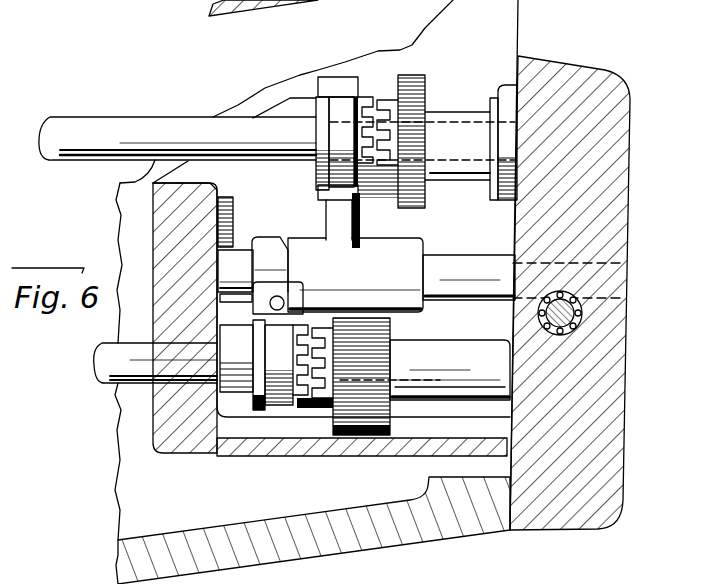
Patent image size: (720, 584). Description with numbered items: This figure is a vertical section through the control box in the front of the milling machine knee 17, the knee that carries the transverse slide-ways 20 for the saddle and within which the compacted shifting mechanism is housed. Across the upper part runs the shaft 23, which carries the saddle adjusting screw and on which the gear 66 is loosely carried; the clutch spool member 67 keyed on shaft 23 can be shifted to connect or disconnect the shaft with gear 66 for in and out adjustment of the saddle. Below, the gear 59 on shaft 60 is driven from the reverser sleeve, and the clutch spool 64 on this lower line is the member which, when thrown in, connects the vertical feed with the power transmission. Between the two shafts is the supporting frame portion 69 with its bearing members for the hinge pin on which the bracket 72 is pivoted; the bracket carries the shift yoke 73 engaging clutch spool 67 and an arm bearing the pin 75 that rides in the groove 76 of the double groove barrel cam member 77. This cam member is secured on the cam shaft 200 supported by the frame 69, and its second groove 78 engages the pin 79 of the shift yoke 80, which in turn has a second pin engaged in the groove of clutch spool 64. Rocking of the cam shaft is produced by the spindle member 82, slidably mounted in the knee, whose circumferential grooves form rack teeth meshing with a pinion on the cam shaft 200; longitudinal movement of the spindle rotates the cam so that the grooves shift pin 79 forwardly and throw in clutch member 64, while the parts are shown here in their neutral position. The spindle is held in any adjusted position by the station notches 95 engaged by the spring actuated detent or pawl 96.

The knee 17 is at (133, 515).
The transverse slide-ways 20 is at (508, 21).
The shaft 23 is at (148, 120).
The gear 59 is at (357, 436).
The shaft 60 is at (118, 356).
The clutch spool 64 is at (277, 406).
The gear 66 is at (408, 77).
The clutch spool member 67 is at (322, 108).
The supporting frame portion 69 is at (406, 452).
The bracket 72 is at (363, 212).
The shift yoke 73 is at (335, 79).
The pin 75 is at (399, 333).
The groove 76 is at (340, 250).
The double groove barrel cam member 77 is at (428, 244).
The second groove 78 is at (282, 242).
The pin 79 is at (222, 303).
The shift yoke 80 is at (218, 322).
The spindle member 82 is at (583, 313).
The station notches 95 is at (218, 252).
The spring actuated detent or pawl 96 is at (217, 214).
The cam shaft 200 is at (485, 267).